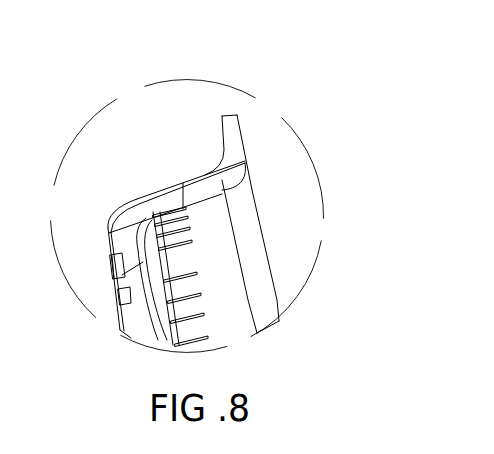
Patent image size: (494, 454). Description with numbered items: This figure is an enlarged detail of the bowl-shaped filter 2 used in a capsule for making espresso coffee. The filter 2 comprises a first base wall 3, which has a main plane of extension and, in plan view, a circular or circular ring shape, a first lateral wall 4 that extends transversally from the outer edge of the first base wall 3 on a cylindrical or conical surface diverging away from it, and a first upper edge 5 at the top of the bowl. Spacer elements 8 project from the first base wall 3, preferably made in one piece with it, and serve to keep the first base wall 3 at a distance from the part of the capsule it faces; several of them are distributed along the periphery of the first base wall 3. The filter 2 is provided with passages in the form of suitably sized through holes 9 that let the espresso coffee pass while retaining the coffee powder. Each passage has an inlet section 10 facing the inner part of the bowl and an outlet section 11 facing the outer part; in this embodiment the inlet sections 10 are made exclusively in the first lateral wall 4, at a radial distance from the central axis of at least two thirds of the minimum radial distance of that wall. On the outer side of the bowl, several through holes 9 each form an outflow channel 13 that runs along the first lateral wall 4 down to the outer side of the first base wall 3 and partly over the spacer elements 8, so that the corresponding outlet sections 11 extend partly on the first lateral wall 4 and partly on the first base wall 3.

The filter 2 is at (0, 88).
The first base wall 3 is at (137, 280).
The first lateral wall 4 is at (203, 185).
The first upper edge 5 is at (229, 136).
The spacer elements 8 is at (110, 243).
The through holes 9 is at (183, 277).
The inlet section 10 is at (176, 232).
The outlet section 11 is at (112, 177).
The outflow channel 13 is at (127, 215).